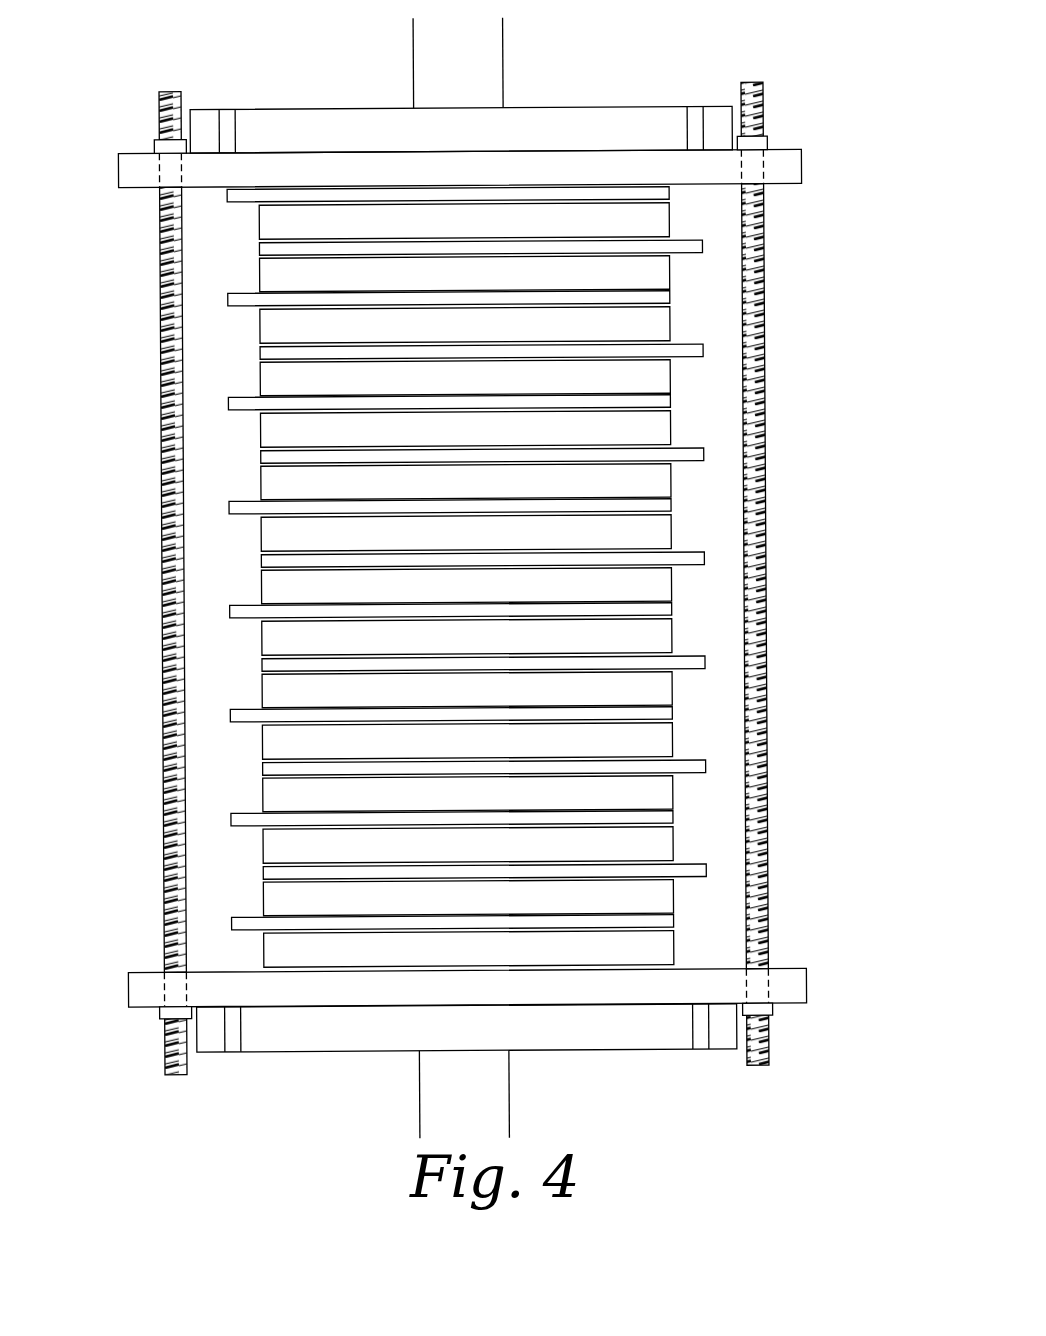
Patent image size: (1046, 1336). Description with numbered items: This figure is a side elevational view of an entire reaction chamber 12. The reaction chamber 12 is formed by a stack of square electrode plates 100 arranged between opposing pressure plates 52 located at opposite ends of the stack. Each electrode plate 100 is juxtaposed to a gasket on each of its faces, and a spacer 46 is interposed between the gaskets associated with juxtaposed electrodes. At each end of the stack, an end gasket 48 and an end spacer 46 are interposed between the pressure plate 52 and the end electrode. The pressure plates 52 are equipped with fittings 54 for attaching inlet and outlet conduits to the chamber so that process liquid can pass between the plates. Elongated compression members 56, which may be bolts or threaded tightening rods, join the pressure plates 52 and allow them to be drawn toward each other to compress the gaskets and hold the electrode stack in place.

The reaction chamber 12 is at (708, 66).
The spacer 46 is at (462, 232).
The end gasket 48 is at (667, 204).
The pressure plate 52 is at (286, 121).
The fitting 54 is at (427, 53).
The compression bolt 56 is at (163, 470).
The electrode plate 100 is at (262, 661).